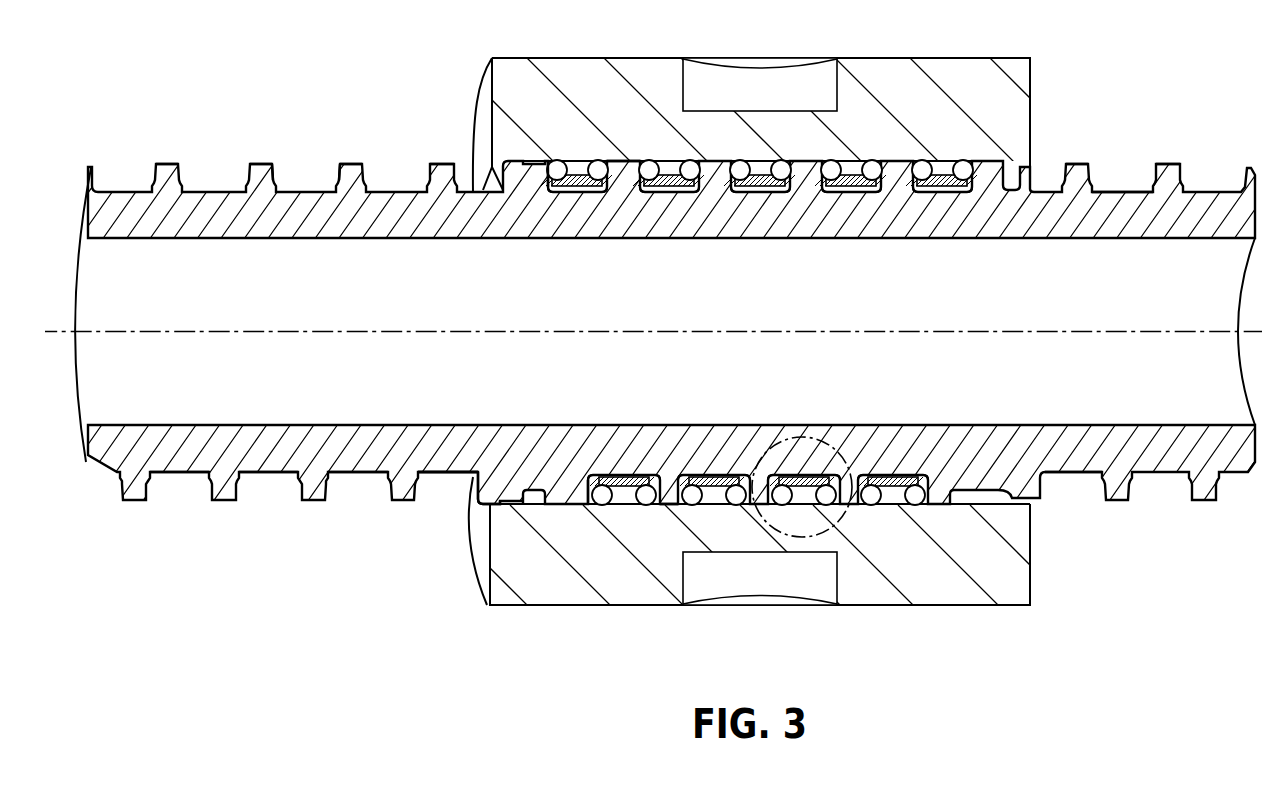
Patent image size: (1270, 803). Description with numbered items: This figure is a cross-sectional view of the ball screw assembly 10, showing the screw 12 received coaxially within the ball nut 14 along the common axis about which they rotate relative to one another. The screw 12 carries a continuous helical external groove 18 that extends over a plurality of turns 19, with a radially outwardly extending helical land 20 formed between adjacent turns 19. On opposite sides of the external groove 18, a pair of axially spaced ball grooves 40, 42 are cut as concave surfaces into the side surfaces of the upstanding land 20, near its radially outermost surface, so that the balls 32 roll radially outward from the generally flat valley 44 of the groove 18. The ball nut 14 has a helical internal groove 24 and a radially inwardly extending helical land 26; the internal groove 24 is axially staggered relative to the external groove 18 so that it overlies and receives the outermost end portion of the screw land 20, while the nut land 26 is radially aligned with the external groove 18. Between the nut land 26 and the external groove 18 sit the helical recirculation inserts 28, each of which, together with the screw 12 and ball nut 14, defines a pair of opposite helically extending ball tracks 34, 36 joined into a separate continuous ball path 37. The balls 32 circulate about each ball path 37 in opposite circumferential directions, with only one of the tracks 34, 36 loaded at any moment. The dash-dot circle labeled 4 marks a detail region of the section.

The assembly 10 is at (205, 660).
The screw 12 is at (123, 145).
The ball nut 14 is at (475, 82).
The helical external groove 18 is at (1137, 191).
The turns 19 is at (193, 497).
The helical land 20 is at (260, 163).
The helical internal groove 24 is at (575, 493).
The helical land 26 is at (667, 177).
The recirculation insert 28 is at (577, 165).
The balls 32 is at (557, 159).
The ball track 34 is at (542, 180).
The ball track 36 is at (617, 178).
The ball path 37 is at (628, 502).
The ball groove 40 is at (338, 163).
The ball groove 42 is at (272, 163).
The valley 44 is at (440, 471).
The detail circle FIG. 4 is at (792, 537).